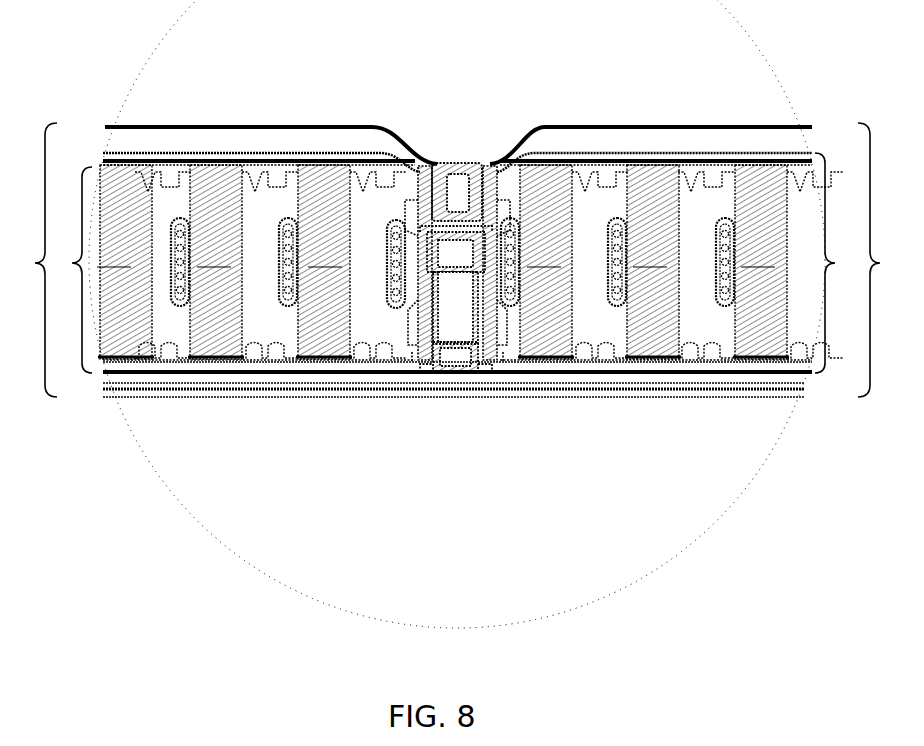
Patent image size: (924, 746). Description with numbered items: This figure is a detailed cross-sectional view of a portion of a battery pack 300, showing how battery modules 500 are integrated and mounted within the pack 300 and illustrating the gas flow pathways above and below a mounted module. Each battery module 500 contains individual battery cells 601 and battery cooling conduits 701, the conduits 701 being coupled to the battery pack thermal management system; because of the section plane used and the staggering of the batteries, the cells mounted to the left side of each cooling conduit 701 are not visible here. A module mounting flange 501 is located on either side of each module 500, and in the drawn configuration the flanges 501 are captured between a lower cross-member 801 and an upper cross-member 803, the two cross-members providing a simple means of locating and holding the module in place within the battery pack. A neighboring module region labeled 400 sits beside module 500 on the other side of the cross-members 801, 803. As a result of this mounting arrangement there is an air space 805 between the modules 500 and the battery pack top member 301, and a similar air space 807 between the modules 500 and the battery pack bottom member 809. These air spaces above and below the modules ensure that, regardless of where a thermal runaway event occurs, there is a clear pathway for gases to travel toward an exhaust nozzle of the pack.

The battery pack 300 is at (457, 260).
The battery pack top member 301 is at (237, 126).
The right module 400 is at (681, 263).
The battery module 500 is at (231, 269).
The module mounting flange 501 is at (437, 228).
The battery cell 601 is at (470, 262).
The battery cooling conduit 701 is at (396, 270).
The lower cross-member 801 is at (463, 362).
The upper cross-member 803 is at (457, 192).
The air space 805 is at (260, 148).
The air space 807 is at (345, 376).
The battery pack bottom member 809 is at (590, 395).